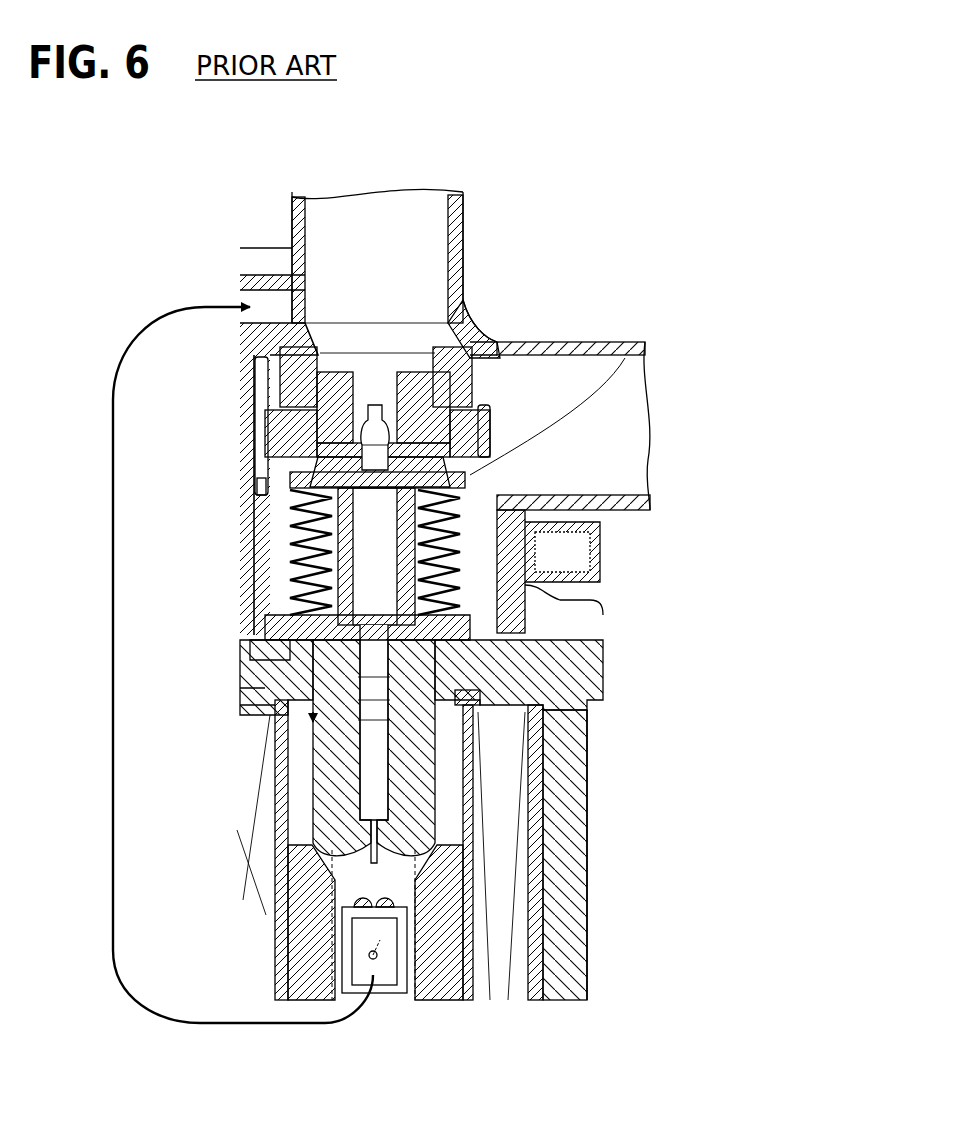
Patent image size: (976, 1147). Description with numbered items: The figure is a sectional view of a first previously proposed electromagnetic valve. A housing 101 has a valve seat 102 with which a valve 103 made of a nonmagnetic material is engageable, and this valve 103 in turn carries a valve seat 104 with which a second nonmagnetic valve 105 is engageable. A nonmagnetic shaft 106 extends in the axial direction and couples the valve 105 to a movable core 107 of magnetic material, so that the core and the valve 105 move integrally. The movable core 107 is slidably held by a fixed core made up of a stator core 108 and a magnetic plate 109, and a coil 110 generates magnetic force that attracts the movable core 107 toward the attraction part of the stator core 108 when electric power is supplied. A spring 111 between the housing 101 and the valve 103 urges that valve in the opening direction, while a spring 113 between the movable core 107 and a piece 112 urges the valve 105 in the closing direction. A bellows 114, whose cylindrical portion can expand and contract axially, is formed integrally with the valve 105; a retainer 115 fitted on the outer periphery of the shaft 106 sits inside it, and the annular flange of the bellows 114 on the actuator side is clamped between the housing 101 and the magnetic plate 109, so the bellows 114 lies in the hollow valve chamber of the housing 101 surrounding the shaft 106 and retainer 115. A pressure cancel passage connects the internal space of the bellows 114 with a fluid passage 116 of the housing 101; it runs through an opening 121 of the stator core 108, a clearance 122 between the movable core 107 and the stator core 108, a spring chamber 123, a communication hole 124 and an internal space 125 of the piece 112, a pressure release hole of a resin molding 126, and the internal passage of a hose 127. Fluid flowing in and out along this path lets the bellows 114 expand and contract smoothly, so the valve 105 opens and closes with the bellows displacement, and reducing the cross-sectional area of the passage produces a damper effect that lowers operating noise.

The housing 101 is at (245, 505).
The valve seat 102 is at (257, 373).
The valve 103 is at (488, 413).
The valve seat 104 is at (640, 342).
The valve 105 is at (460, 483).
The shaft 106 is at (383, 571).
The movable core 107 is at (415, 805).
The stator core 108 is at (483, 732).
The magnetic plate 109 is at (555, 668).
The coil 110 is at (565, 910).
The spring 111 is at (480, 315).
The piece 112 is at (373, 957).
The spring 113 is at (310, 855).
The bellows 114 is at (292, 562).
The retainer 115 is at (520, 525).
The fluid passage 116 is at (273, 300).
The opening 121 is at (520, 622).
The clearance 122 is at (462, 763).
The spring chamber 123 is at (540, 858).
The communication hole 124 is at (385, 1000).
The internal space 125 is at (392, 948).
The resin molding 126 is at (582, 960).
The hose 127 is at (115, 632).